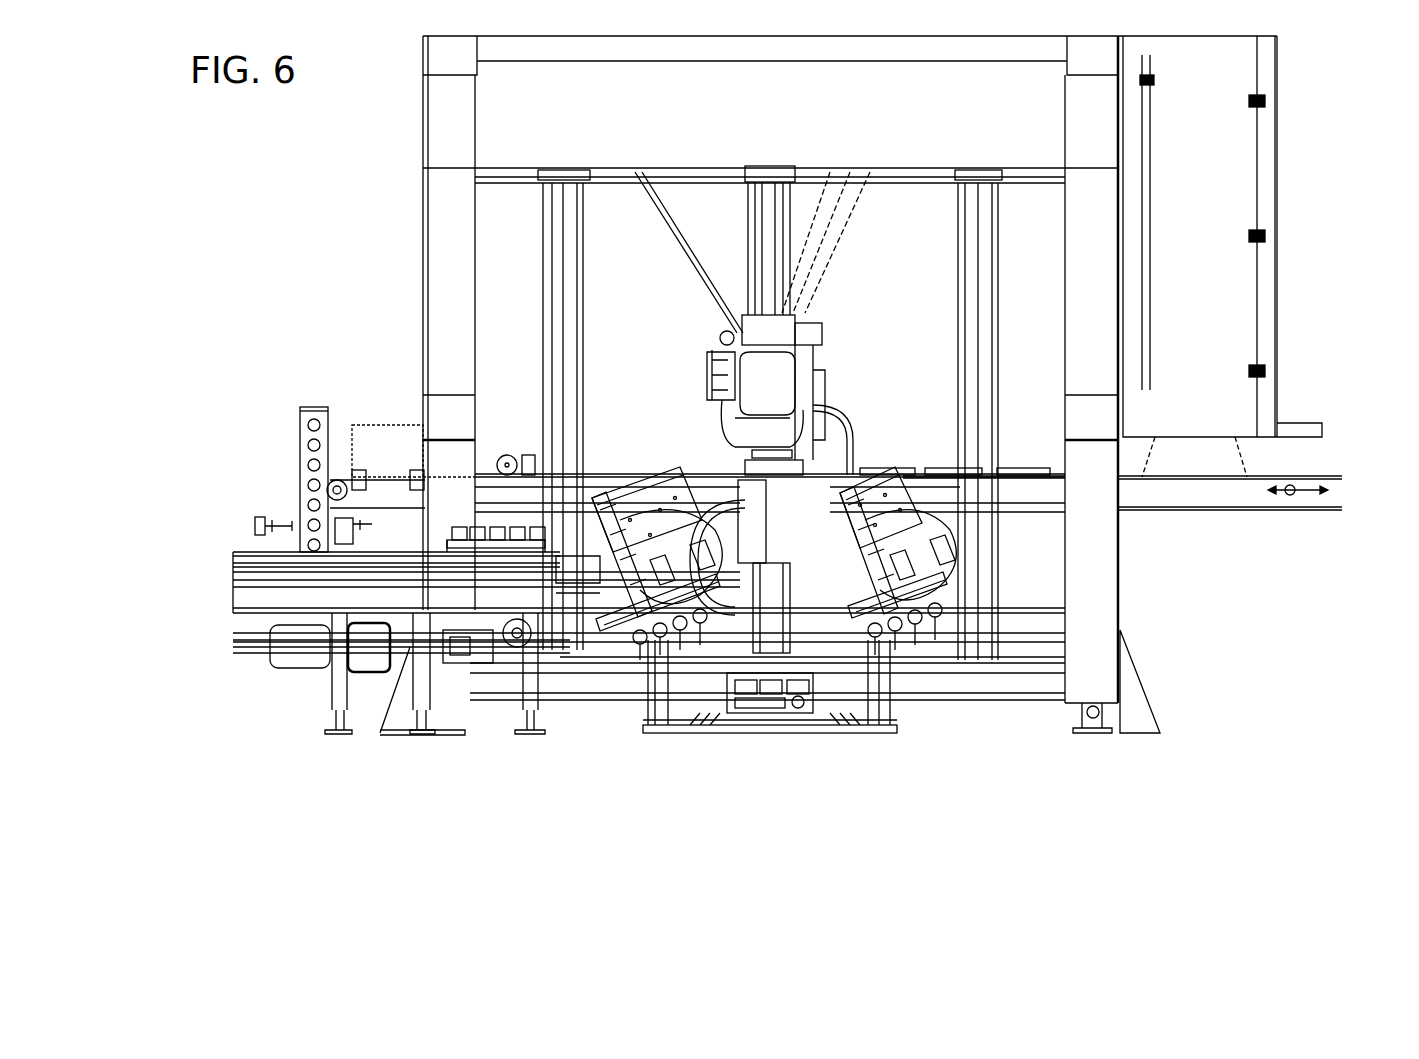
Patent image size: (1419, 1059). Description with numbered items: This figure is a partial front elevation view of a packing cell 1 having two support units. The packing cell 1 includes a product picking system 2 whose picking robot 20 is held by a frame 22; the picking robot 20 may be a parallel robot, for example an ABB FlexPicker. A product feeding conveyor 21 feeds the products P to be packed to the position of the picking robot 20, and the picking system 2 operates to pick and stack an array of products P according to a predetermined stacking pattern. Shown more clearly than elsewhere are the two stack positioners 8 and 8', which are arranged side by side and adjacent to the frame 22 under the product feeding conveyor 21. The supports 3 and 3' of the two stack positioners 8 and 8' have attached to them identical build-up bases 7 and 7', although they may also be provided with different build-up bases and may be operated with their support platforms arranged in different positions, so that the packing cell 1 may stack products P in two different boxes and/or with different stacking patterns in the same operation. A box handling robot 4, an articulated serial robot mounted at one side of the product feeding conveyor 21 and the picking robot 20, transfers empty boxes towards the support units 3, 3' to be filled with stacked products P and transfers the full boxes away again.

The packing cell 1 is at (226, 252).
The product picking system 2 is at (970, 337).
The support unit 3 is at (932, 622).
The support unit 3' is at (673, 642).
The box handling robot 4 is at (763, 393).
The build-up base 7 is at (1014, 569).
The build-up base 7' is at (640, 625).
The stack positioner 8 is at (1047, 651).
The stack positioner 8' is at (459, 631).
The picking robot 20 is at (638, 257).
The product feeding conveyor 21 is at (1015, 482).
The frame 22 is at (447, 296).
The products P is at (880, 468).